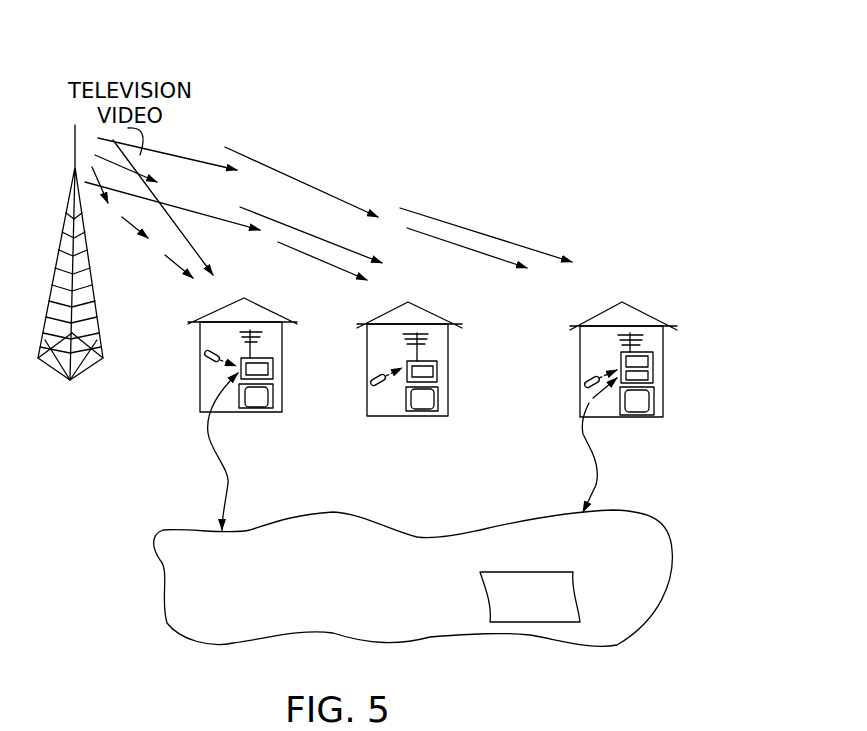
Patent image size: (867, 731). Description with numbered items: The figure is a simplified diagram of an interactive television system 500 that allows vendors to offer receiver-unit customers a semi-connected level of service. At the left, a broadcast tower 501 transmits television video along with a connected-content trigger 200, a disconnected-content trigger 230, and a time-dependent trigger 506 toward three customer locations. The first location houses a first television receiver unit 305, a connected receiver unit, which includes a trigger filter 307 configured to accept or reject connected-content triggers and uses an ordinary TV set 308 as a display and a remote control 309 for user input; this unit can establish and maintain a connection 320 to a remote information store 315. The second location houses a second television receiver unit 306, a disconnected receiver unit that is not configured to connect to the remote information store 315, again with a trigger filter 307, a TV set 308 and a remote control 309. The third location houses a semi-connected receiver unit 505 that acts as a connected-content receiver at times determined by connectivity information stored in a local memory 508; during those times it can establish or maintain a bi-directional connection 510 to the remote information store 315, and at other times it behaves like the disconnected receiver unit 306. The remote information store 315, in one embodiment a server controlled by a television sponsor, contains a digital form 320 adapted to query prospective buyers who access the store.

The interactive television system 500 is at (688, 77).
The television broadcast tower 501 is at (73, 152).
The connected-content trigger 200 is at (222, 156).
The disconnected-content trigger 230 is at (373, 205).
The time-dependent trigger 506 is at (312, 258).
The first television receiver unit 305 is at (275, 358).
The second television receiver unit 306 is at (437, 362).
The semi-connected receiver unit 505 is at (653, 357).
The trigger filter 307 is at (273, 368).
The local memory 508 is at (653, 380).
The TV set 308 is at (273, 392).
The remote control 309 is at (205, 352).
The connection 320 is at (222, 455).
The bi-directional connection 510 is at (604, 468).
The remote information store 315 is at (332, 616).